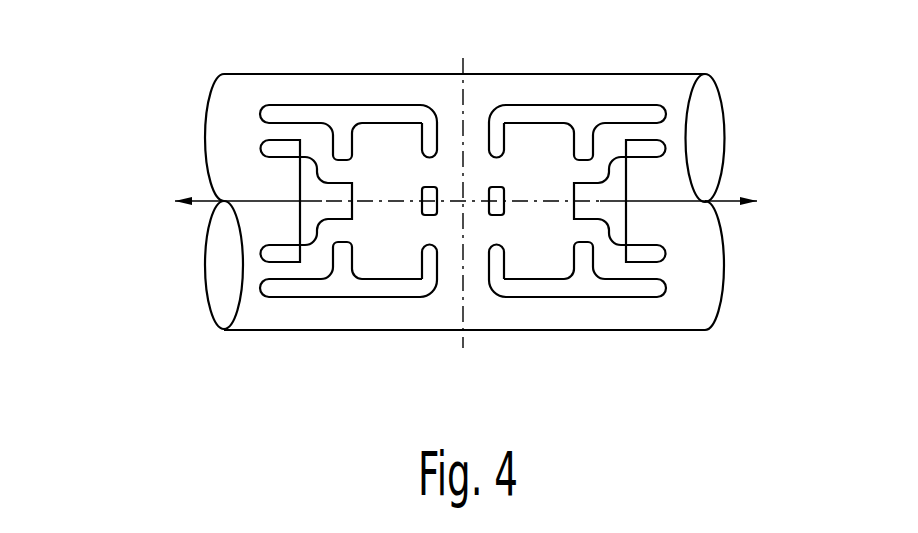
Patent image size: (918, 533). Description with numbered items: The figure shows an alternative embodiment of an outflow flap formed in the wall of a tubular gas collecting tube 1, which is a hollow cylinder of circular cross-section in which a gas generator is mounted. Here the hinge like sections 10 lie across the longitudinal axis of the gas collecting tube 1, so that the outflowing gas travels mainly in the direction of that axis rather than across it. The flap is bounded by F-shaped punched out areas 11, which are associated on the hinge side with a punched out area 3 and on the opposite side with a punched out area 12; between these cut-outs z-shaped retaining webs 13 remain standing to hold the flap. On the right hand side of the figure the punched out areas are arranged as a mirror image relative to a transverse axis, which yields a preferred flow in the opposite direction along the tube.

The gas collecting tube 1 is at (655, 93).
The punched out area 3 is at (431, 195).
The hinge like section 10 is at (434, 160).
The F-shaped punched out area 11 is at (372, 103).
The punched out area 12 is at (281, 251).
The z-shaped retaining web 13 is at (293, 132).